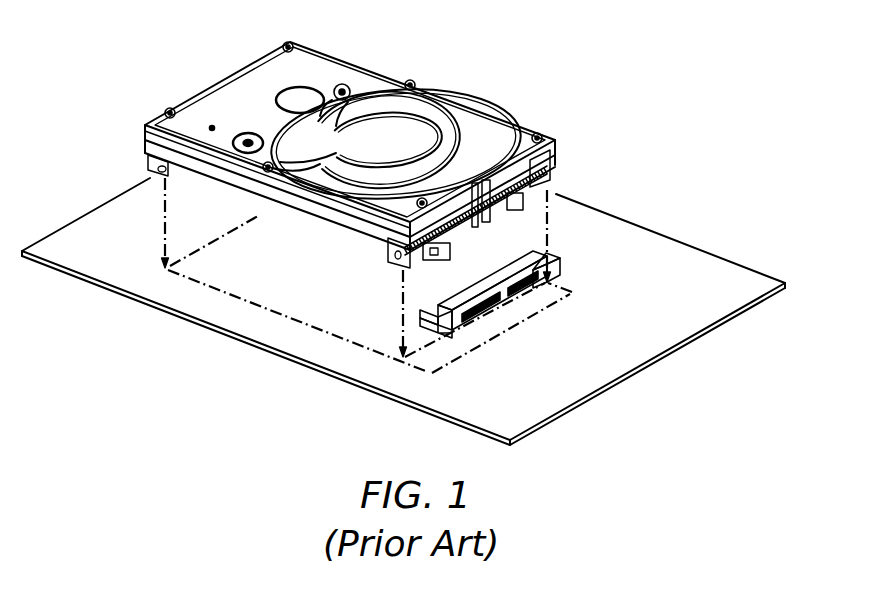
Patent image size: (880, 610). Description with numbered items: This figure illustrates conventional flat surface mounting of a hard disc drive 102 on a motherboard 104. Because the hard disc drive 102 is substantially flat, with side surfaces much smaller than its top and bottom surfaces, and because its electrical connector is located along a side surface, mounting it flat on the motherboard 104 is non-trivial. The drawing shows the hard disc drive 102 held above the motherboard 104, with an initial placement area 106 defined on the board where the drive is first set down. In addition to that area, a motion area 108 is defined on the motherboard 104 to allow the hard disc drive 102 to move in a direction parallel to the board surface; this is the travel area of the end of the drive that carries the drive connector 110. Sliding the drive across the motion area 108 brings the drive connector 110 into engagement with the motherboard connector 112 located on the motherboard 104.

The hard disc drive 102 is at (481, 90).
The motherboard 104 is at (708, 355).
The initial placement area 106 is at (163, 286).
The motion area 108 is at (578, 274).
The drive connector 110 is at (531, 168).
The motherboard connector 112 is at (425, 341).